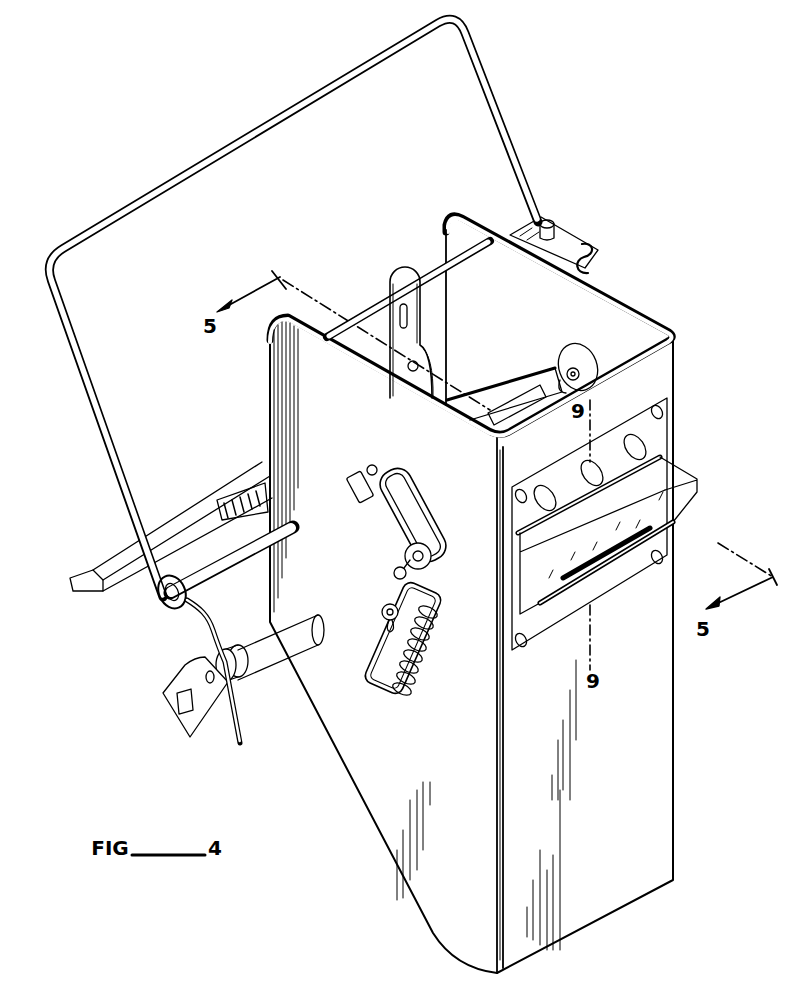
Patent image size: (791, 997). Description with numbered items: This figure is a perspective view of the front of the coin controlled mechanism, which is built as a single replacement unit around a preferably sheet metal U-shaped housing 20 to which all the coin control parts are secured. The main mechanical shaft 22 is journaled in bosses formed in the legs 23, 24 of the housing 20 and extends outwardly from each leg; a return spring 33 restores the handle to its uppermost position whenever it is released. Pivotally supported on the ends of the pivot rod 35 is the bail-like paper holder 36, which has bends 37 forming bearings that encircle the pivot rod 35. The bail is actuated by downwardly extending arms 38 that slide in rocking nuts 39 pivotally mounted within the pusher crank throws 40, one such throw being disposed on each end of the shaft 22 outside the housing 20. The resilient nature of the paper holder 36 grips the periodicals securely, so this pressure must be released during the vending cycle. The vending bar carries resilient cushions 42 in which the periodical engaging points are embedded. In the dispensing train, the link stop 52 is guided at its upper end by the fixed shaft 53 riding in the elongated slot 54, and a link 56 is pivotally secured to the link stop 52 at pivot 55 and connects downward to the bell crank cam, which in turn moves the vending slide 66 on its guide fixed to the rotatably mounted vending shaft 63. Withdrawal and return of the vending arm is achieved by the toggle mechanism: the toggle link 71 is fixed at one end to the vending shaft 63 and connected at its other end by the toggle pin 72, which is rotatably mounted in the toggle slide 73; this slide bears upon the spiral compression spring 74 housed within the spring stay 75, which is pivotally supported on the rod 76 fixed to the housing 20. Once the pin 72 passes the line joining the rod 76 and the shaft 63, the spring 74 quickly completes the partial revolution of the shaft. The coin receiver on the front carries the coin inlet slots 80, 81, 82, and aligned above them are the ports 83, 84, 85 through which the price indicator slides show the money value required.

The housing 20 is at (363, 818).
The mechanical shaft 22 is at (300, 647).
The leg 23 is at (338, 430).
The leg 24 is at (516, 330).
The return spring 33 is at (597, 272).
The pivot rod 35 is at (223, 567).
The paper holder 36 is at (260, 128).
The bends 37 is at (170, 604).
The downwardly extending arms 38 is at (241, 720).
The rocking nuts 39 is at (233, 650).
The pusher crank throw 40 is at (207, 722).
The resilient cushions 42 is at (199, 512).
The link stop 52 is at (406, 348).
The fixed shaft 53 is at (432, 272).
The elongated slot 54 is at (410, 317).
The pivot 55 is at (418, 366).
The link 56 is at (432, 386).
The vending shaft 63 is at (360, 498).
The vending slide 66 is at (257, 496).
The toggle link 71 is at (416, 520).
The toggle pin 72 is at (392, 571).
The toggle slide 73 is at (430, 569).
The spiral compression spring 74 is at (412, 650).
The spring stay 75 is at (381, 688).
The rod 76 is at (386, 610).
The coin inlet slot 80 is at (580, 570).
The coin inlet slot 81 is at (608, 573).
The coin inlet slot 82 is at (668, 517).
The port 83 is at (541, 486).
The port 84 is at (590, 468).
The port 85 is at (634, 438).